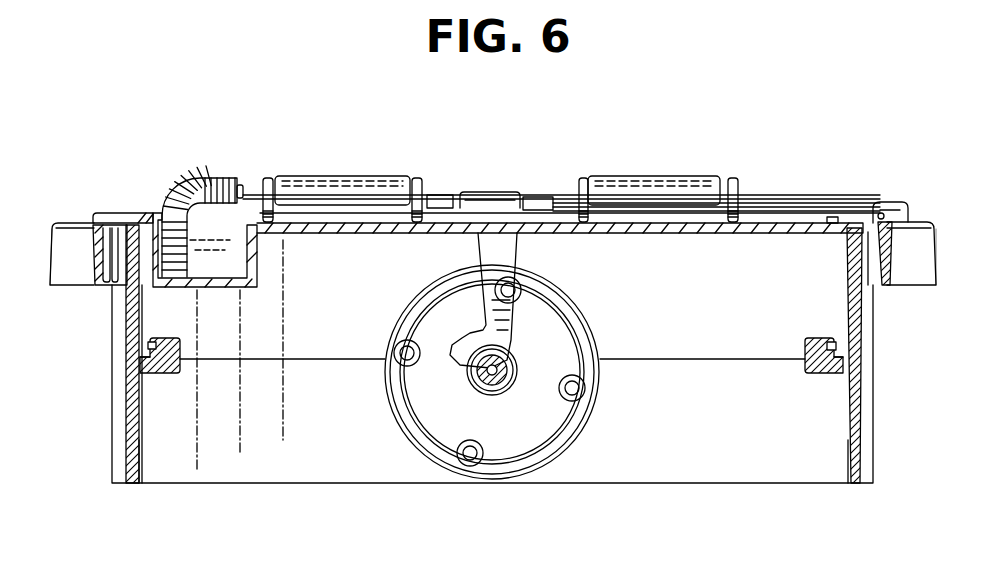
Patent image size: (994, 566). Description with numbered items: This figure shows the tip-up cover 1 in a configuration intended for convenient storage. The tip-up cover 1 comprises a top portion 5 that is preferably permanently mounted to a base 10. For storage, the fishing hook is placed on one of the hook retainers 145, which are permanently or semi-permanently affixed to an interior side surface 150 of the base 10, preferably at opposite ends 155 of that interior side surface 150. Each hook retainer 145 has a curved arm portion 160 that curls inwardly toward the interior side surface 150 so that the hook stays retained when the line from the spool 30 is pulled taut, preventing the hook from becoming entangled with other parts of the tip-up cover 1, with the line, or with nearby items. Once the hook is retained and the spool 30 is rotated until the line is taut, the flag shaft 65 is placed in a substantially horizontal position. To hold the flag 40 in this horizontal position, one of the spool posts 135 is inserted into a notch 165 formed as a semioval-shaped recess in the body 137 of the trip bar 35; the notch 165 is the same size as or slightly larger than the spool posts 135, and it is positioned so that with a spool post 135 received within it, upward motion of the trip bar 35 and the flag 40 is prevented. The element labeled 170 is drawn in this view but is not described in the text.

The tip-up cover 1 is at (70, 185).
The top portion 5 is at (127, 213).
The base 10 is at (858, 463).
The spool 30 is at (527, 417).
The trip bar 35 is at (487, 216).
The flag 40 is at (255, 190).
The flag shaft 65 is at (560, 200).
The spool posts 135 is at (510, 288).
The body 137 is at (493, 247).
The hook retainers 145 is at (165, 372).
The interior side surface 150 is at (135, 458).
The opposite ends 155 is at (123, 420).
The curved arm portion 160 is at (152, 342).
The notch 165 is at (488, 308).
The latch 170 is at (877, 205).